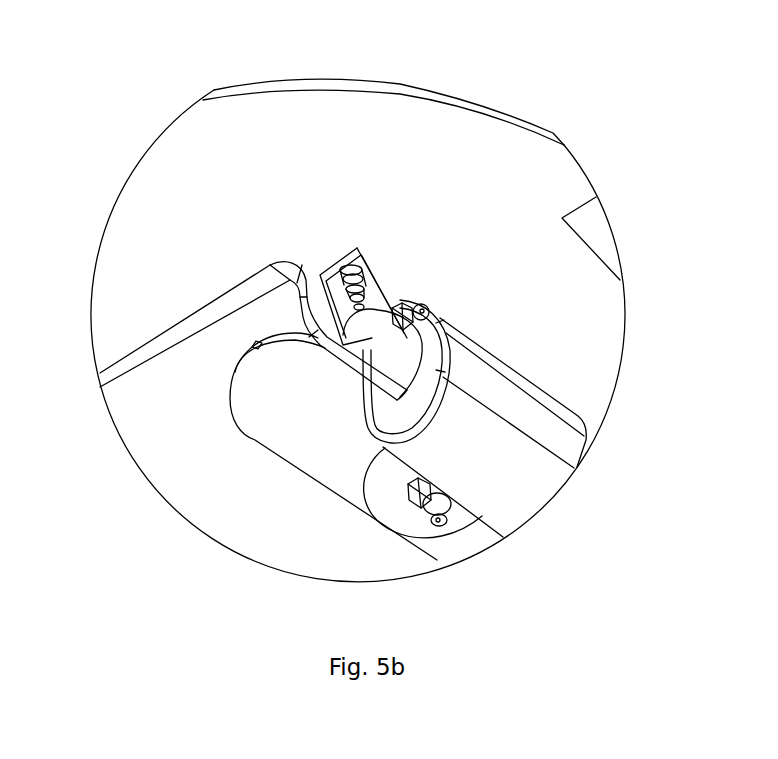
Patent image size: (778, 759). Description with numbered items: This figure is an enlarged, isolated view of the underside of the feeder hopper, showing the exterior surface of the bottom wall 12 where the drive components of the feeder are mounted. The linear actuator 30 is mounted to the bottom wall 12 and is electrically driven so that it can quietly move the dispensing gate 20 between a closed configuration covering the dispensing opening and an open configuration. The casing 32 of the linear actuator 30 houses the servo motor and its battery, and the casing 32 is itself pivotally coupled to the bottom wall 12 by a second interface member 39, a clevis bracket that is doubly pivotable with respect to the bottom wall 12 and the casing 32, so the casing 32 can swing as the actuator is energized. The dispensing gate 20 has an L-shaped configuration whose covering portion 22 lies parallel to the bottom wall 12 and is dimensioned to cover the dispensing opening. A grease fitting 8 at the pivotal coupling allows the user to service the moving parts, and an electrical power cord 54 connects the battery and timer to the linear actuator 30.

The bottom wall 12 is at (380, 115).
The second interface member 39 is at (393, 278).
The linear actuator 30 is at (525, 408).
The electrical power cord 54 is at (183, 318).
The covering portion 22 is at (257, 390).
The casing 32 is at (463, 470).
The dispensing gate 20 is at (293, 430).
The grease fitting 8 is at (437, 525).